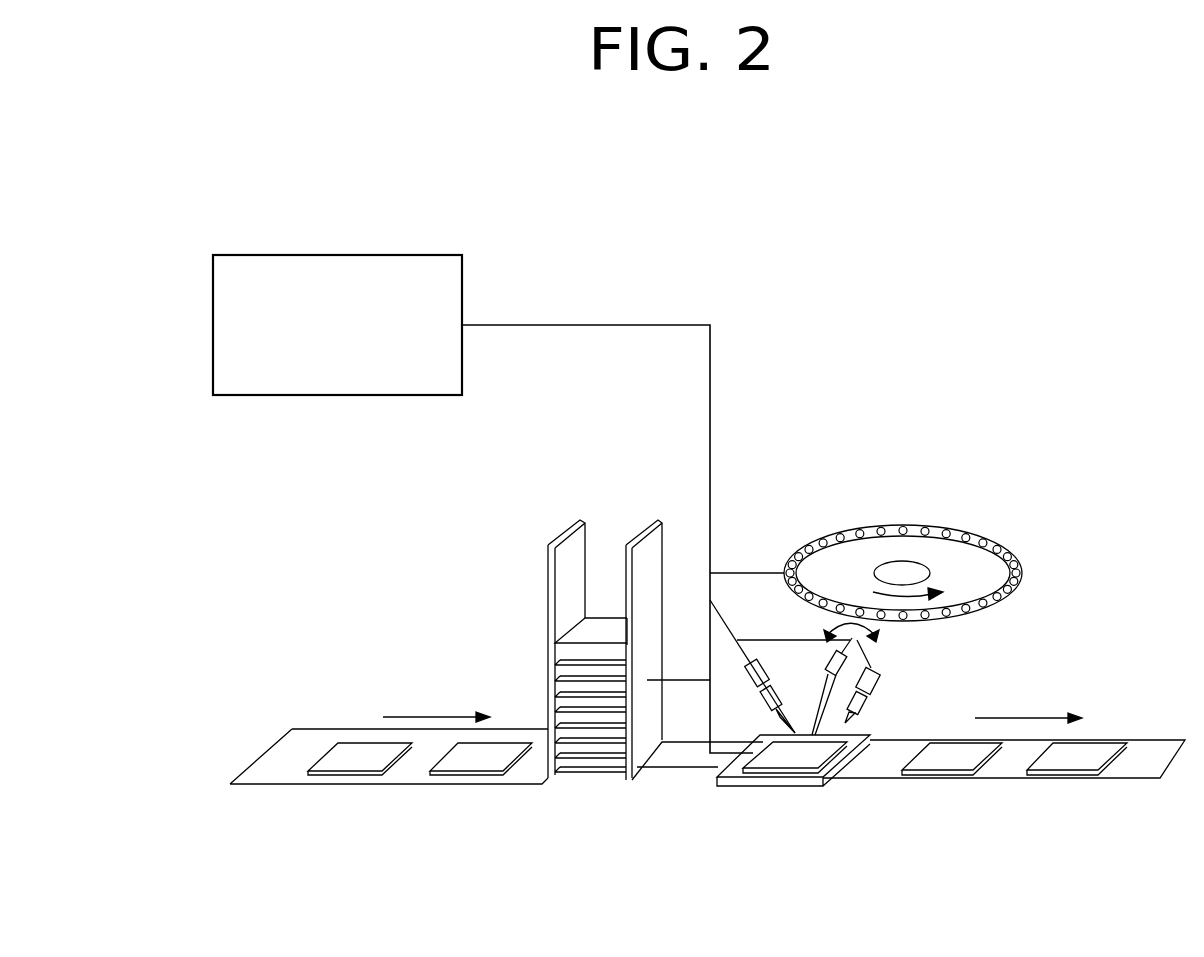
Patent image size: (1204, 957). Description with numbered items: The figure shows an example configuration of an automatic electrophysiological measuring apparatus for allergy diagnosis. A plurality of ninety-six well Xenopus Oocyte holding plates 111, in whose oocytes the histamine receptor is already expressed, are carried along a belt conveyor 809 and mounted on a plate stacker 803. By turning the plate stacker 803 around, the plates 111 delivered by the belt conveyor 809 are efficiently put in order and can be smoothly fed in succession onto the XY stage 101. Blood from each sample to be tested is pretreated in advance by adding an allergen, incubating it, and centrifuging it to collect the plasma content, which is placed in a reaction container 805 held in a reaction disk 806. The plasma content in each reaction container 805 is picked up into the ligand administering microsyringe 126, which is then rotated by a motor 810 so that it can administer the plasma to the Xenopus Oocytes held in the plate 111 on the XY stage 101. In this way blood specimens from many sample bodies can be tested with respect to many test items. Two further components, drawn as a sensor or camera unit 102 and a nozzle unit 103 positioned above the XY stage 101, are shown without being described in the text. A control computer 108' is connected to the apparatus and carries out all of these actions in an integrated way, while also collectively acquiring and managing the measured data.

The control computer 108' is at (483, 451).
The plate stacker 803 is at (548, 580).
The belt conveyor 809 is at (318, 735).
The 96 well Xenopus Oocyte holding plate 111 is at (352, 760).
The XY stage 101 is at (818, 782).
The reaction disk 806 is at (987, 538).
The reaction container 805 is at (875, 533).
The motor 810 is at (857, 642).
The ligand administering microsyringe 126 is at (828, 658).
The camera / sensor 102 is at (793, 730).
The nozzle 103 is at (845, 718).